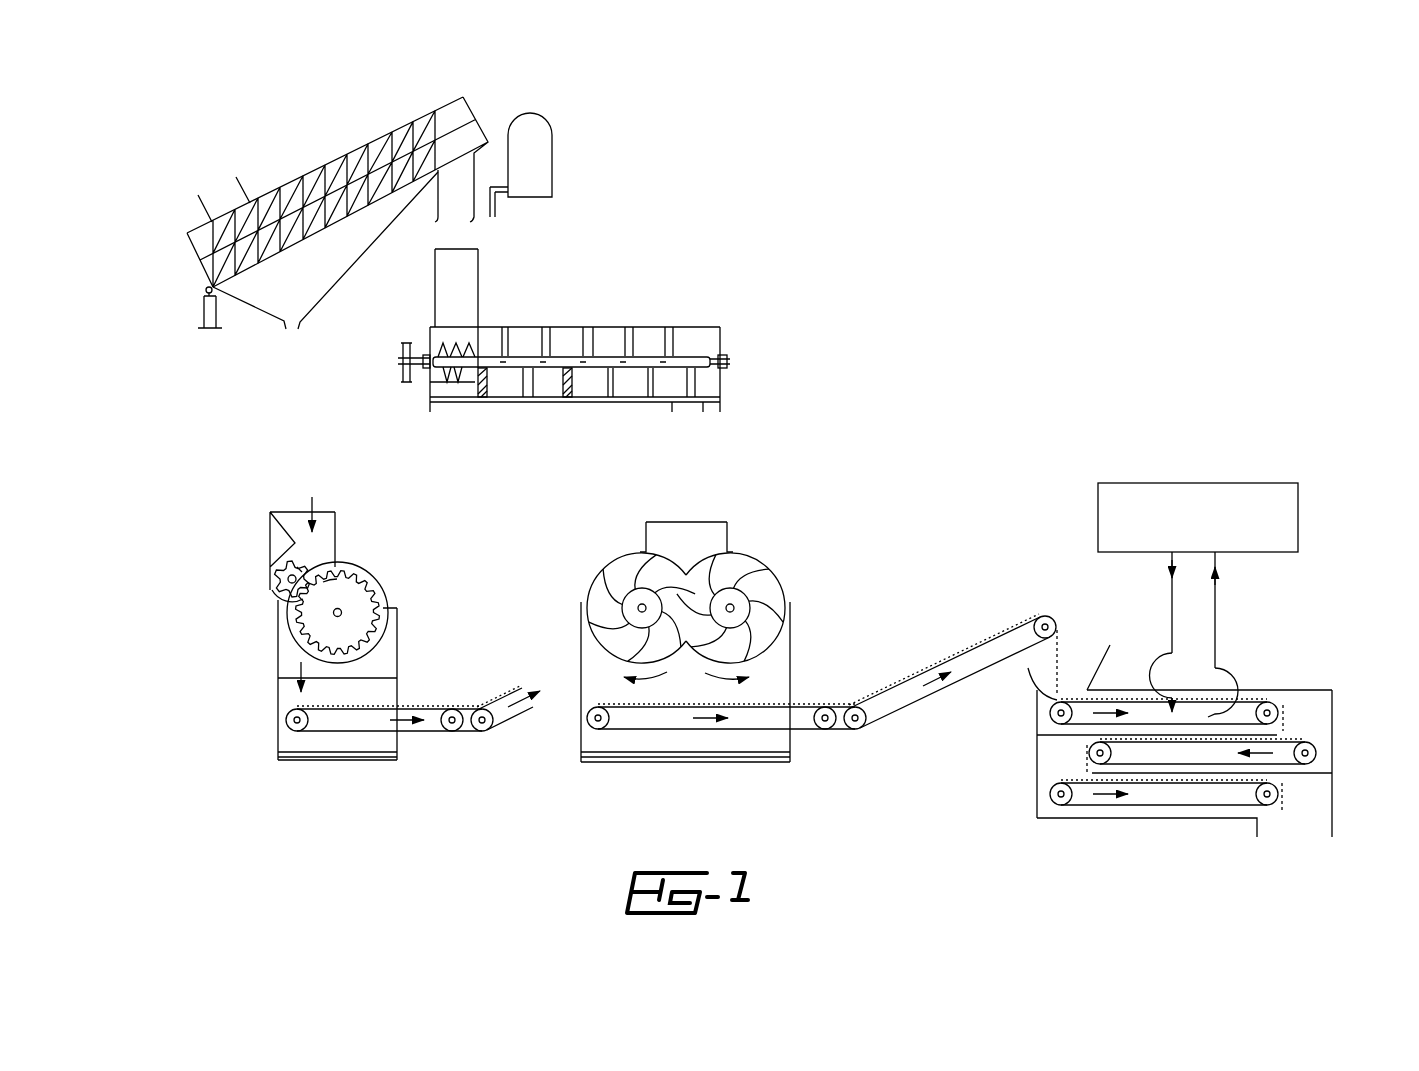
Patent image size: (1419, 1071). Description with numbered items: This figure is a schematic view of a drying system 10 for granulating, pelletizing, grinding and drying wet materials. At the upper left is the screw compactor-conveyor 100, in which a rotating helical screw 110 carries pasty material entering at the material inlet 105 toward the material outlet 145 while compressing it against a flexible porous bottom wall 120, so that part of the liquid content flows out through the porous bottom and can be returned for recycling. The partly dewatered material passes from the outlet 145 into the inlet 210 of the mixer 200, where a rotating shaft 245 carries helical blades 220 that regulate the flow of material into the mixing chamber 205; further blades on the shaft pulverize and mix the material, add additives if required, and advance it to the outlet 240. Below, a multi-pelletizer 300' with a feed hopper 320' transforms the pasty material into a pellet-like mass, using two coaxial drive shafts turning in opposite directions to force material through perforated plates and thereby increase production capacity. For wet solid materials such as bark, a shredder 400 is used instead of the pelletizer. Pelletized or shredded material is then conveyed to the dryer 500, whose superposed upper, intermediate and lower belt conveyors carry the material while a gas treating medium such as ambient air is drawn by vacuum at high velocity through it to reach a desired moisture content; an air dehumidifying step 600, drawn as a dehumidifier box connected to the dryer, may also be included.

The drying system 10 is at (1026, 214).
The screw compactor-conveyor 100 is at (322, 153).
The material inlet 105 is at (222, 196).
The rotating helical screw 110 is at (381, 158).
The flexible porous bottom wall 120 is at (257, 270).
The material outlet 145 is at (458, 208).
The mixer 200 is at (620, 322).
The mixing chamber 205 is at (507, 385).
The inlet 210 is at (458, 292).
The helical blades 220 is at (446, 382).
The outlet 240 is at (703, 400).
The rotating shaft 245 is at (563, 358).
The multi-pelletizer 300' is at (819, 628).
The grinder hopper 320' is at (653, 521).
The shredder 400 is at (268, 656).
The dryer 500 is at (1273, 676).
The air dehumidifying step 600 is at (1199, 476).